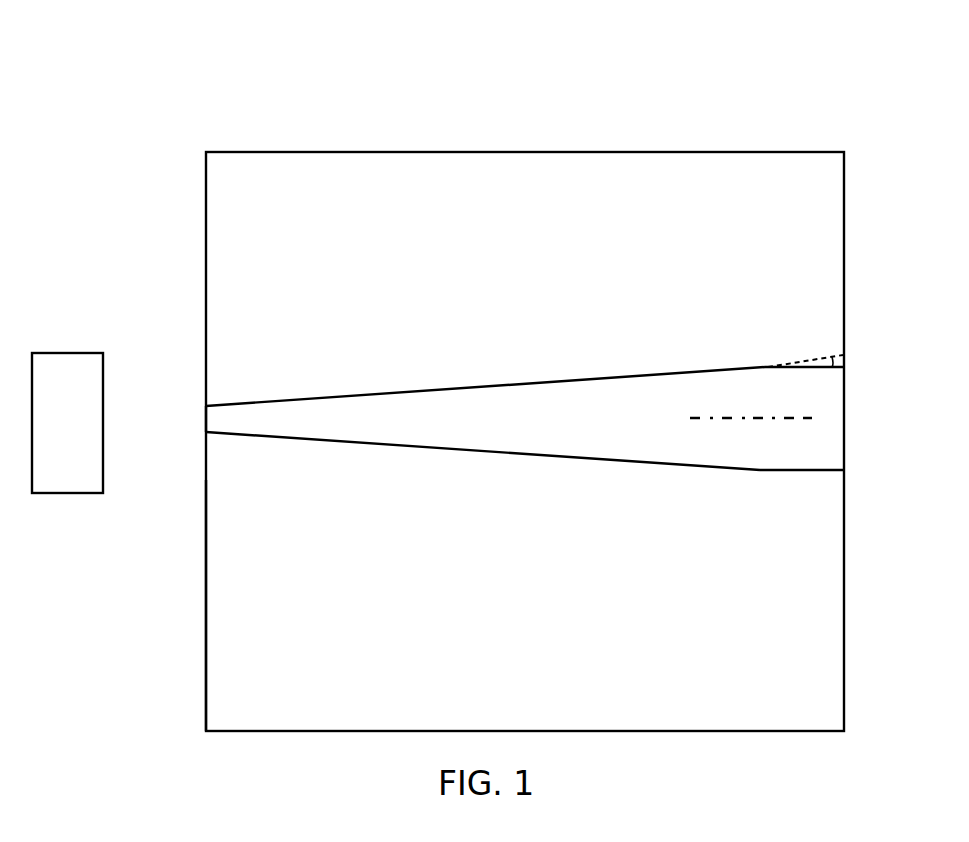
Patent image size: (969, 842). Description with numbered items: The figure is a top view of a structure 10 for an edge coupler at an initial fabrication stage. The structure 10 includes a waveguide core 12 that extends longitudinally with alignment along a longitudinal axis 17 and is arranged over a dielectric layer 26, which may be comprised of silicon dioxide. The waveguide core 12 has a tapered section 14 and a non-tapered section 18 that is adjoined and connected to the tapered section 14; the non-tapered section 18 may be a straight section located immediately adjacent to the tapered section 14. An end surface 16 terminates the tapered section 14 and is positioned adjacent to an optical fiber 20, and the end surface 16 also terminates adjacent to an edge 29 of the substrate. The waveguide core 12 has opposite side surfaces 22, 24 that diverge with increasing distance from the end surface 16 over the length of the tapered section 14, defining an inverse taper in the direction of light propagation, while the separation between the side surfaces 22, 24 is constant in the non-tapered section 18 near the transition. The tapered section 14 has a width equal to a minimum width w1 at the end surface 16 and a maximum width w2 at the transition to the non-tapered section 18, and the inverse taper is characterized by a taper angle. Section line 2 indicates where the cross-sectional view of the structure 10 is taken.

The structure 10 is at (142, 226).
The waveguide core 12 is at (495, 297).
The tapered section 14 is at (484, 294).
The end surface 16 is at (207, 433).
The longitudinal axis 17 is at (722, 418).
The non-tapered section 18 is at (844, 127).
The optical fiber 20 is at (55, 372).
The side surface 22 is at (325, 395).
The side surface 24 is at (333, 442).
The dielectric layer 26 is at (363, 699).
The edge 29 is at (207, 599).
The minimum width w1 is at (143, 377).
The maximum width w2 is at (917, 367).
The section line 2- 2 is at (478, 313).